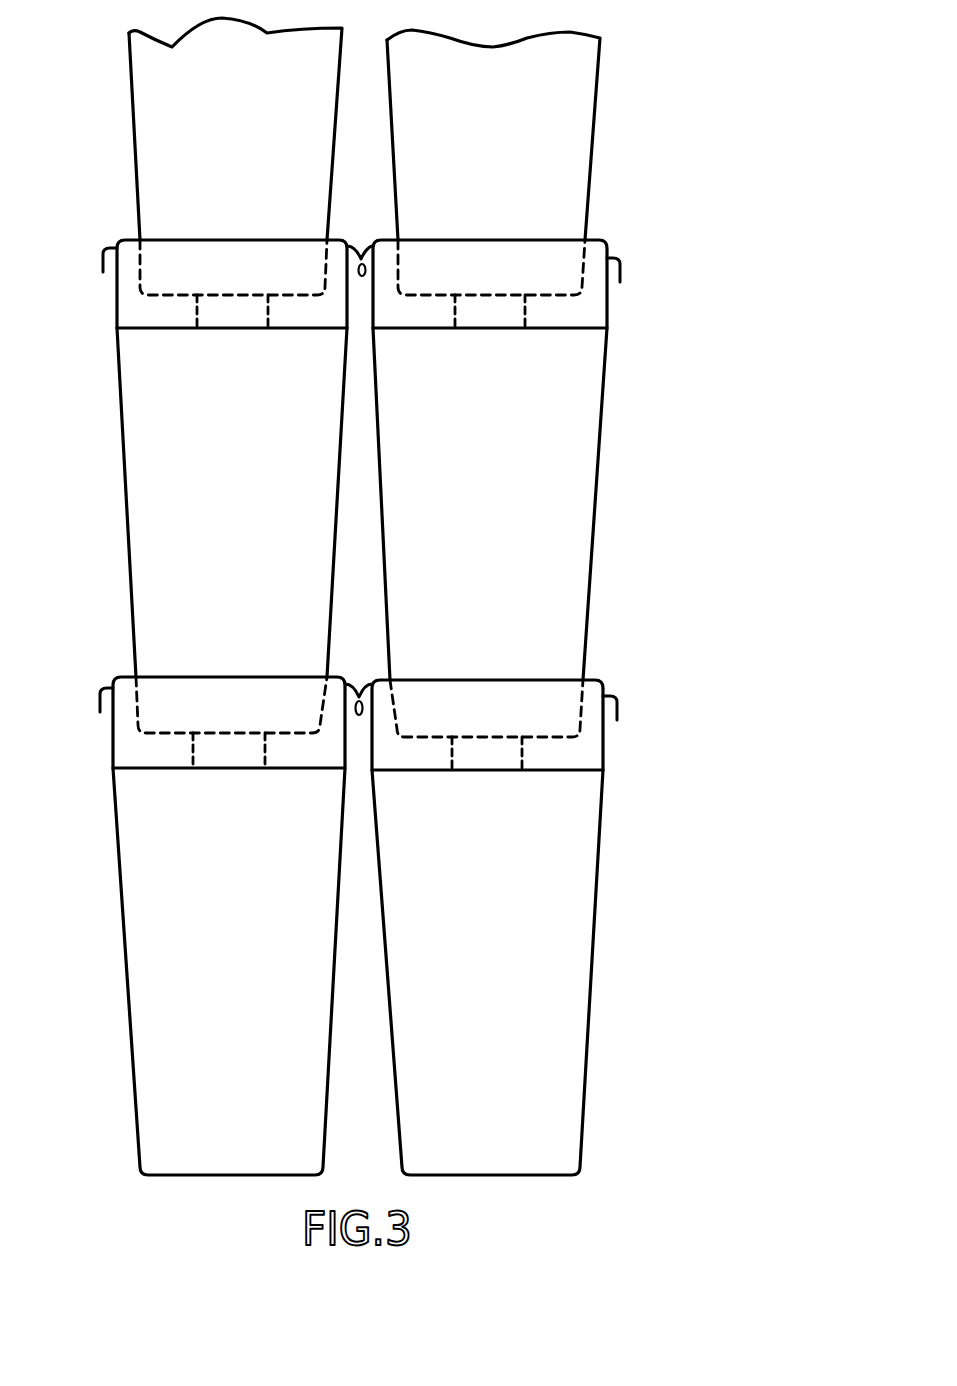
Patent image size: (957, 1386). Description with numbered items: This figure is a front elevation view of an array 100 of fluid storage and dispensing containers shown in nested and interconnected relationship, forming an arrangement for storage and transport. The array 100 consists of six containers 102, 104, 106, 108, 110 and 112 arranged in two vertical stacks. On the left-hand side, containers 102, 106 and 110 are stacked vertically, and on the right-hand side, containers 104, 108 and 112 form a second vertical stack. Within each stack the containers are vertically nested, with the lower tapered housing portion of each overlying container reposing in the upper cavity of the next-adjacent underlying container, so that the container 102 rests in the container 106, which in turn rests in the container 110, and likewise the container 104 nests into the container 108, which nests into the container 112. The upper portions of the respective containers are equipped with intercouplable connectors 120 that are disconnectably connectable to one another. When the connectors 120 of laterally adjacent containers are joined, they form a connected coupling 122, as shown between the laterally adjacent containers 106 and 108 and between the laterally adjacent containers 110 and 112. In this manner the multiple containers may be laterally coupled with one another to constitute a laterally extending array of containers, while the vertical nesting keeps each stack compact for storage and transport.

The array 100 is at (738, 195).
The container 102 is at (153, 164).
The container 104 is at (568, 217).
The container 106 is at (145, 508).
The container 108 is at (568, 522).
The container 110 is at (153, 992).
The container 112 is at (557, 973).
The intercouplable connector 120 is at (103, 268).
The connected coupling 122 is at (369, 233).